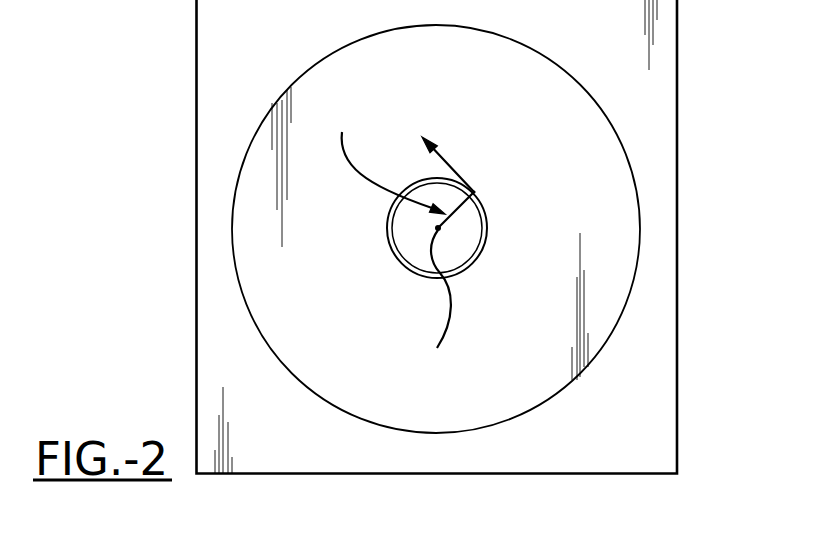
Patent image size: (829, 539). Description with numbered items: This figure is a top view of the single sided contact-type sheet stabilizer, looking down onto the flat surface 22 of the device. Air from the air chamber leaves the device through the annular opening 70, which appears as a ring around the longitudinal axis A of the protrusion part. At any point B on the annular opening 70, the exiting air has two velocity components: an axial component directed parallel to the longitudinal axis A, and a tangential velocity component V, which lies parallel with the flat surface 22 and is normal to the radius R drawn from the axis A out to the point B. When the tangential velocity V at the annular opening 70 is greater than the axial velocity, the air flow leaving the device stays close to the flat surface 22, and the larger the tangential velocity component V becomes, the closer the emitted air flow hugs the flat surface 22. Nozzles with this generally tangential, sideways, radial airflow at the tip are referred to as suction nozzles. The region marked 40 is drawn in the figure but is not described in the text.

The flat surface 22 is at (355, 262).
The inner spot region 40 is at (463, 266).
The annular opening 70 is at (490, 217).
The radius R is at (390, 160).
The tangential velocity component V is at (449, 165).
The point B is at (472, 194).
The longitudinal axis A is at (436, 299).